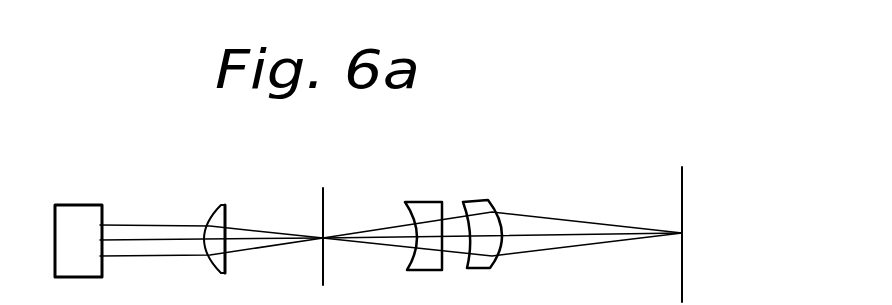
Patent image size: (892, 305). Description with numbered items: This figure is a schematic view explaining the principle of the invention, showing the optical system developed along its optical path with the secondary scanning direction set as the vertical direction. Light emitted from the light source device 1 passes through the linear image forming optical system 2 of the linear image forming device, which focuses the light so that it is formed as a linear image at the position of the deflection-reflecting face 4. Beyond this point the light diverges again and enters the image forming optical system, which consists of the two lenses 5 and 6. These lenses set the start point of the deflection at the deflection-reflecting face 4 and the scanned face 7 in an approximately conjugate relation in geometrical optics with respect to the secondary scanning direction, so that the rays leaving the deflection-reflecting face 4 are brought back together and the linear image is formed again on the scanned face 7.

The light source device 1 is at (90, 210).
The linear image forming optical system 2 is at (222, 212).
The deflection-reflecting face 4 is at (322, 198).
The lens 5 is at (423, 205).
The lens 6 is at (480, 205).
The scanned face 7 is at (683, 185).